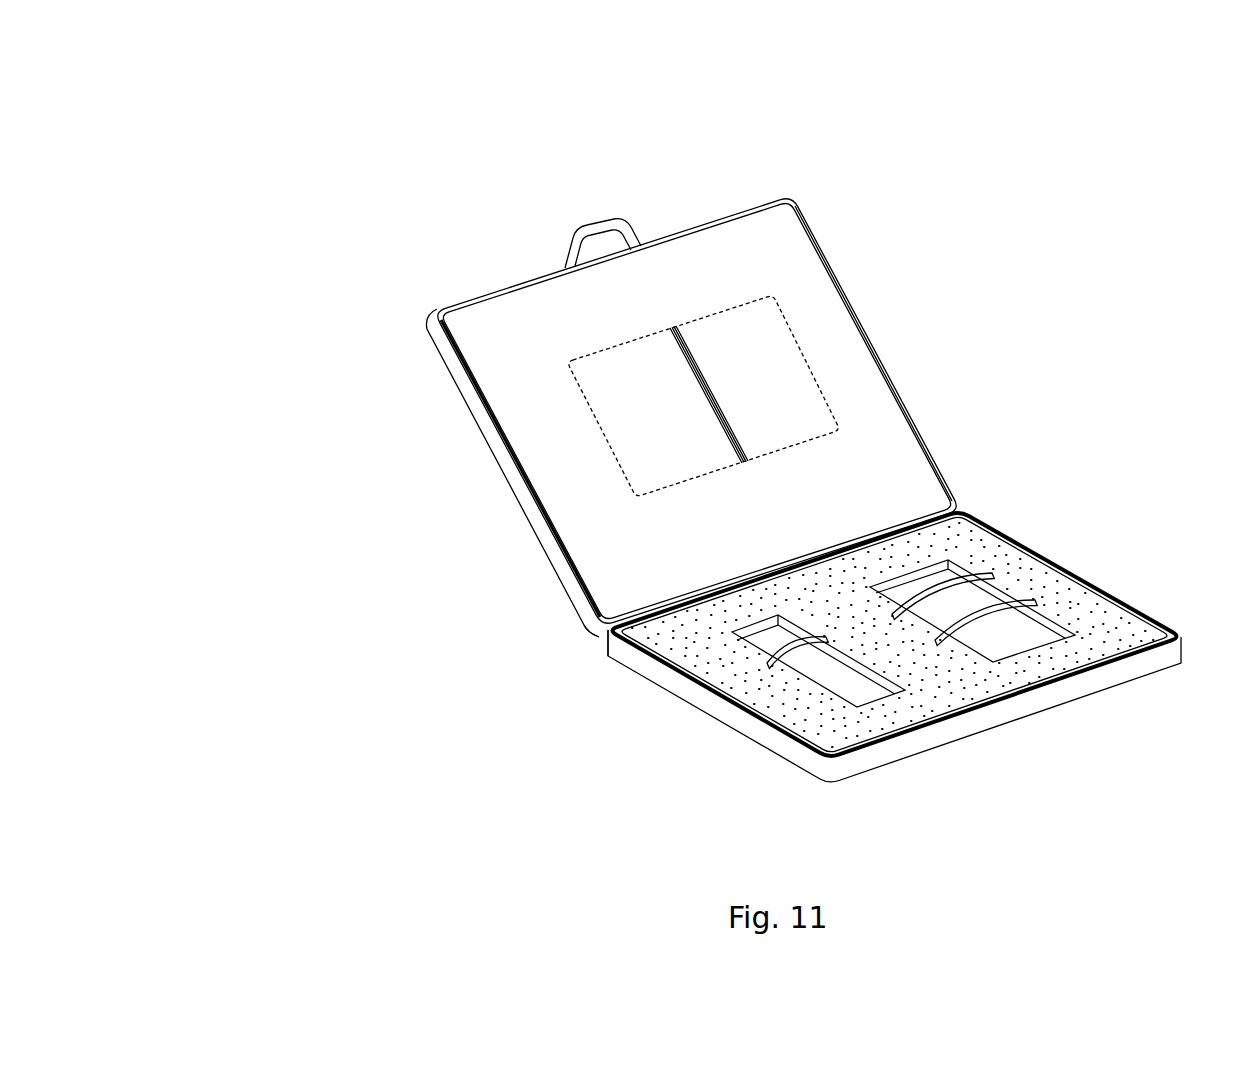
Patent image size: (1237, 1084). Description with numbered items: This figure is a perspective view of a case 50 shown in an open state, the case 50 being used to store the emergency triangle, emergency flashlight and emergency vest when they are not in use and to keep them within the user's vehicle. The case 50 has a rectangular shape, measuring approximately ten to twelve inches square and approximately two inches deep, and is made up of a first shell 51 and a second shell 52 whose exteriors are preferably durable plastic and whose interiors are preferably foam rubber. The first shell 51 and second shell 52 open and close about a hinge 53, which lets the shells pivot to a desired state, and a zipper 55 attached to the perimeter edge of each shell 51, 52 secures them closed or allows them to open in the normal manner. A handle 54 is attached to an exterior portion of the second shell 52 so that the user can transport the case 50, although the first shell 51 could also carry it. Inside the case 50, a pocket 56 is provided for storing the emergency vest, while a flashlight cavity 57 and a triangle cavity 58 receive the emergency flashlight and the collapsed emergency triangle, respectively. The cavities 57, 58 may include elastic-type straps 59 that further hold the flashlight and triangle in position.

The case 50 is at (275, 172).
The first shell 51 is at (780, 748).
The second shell 52 is at (438, 352).
The hinge 53 is at (897, 532).
The handle 54 is at (588, 224).
The zipper 55 is at (618, 644).
The pocket 56 is at (760, 337).
The flashlight cavity 57 is at (857, 687).
The triangle cavity 58 is at (1017, 633).
The elastic-type straps 59 is at (1033, 600).